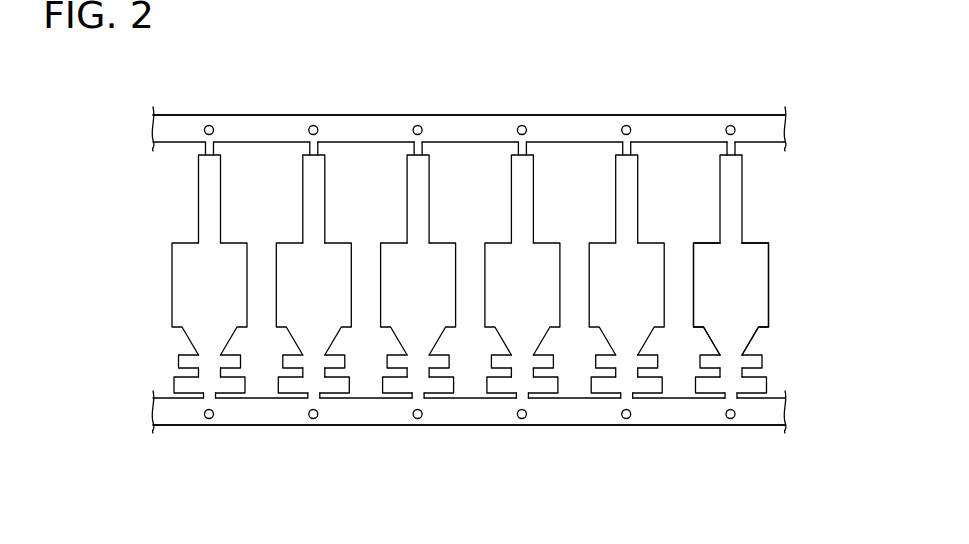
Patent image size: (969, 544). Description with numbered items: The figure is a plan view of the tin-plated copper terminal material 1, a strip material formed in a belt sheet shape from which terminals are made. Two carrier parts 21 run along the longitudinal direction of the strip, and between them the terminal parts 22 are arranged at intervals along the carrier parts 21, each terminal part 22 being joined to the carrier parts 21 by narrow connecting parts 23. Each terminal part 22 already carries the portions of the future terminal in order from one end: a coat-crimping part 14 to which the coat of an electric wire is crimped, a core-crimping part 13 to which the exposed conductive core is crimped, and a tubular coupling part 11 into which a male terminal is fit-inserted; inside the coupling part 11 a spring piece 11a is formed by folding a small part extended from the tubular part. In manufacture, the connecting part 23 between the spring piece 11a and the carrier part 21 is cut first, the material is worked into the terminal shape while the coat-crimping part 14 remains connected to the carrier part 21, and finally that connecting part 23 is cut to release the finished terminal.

The tin-plated copper terminal material 1 is at (783, 192).
The coupling part 11 is at (172, 272).
The spring piece 11a is at (197, 165).
The core-crimping part 13 is at (179, 360).
The coat-crimping part 14 is at (175, 383).
The carrier part 21 is at (569, 128).
The terminal part 22 is at (770, 292).
The connecting part 23 is at (214, 143).